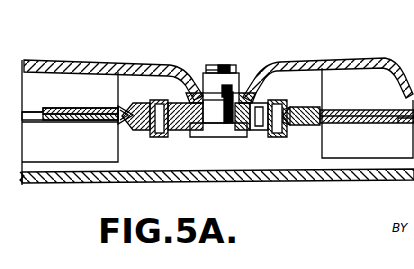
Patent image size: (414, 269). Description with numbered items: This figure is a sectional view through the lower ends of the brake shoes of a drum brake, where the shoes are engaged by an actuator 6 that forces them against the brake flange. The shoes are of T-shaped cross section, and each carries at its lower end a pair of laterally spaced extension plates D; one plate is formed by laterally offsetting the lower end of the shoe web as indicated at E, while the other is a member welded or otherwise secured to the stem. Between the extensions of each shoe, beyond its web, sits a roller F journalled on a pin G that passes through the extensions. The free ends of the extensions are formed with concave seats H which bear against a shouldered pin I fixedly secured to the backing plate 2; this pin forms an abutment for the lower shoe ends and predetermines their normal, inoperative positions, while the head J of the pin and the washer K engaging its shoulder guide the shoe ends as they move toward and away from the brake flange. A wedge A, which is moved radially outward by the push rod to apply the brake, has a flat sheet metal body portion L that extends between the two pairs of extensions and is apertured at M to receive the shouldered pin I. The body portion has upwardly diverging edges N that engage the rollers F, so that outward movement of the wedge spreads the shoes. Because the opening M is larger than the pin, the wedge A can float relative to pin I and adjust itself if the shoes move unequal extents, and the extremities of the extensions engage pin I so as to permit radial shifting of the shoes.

The backing plate 2 is at (290, 63).
The extension plates D is at (73, 107).
The laterally offset lower end of the web E is at (120, 128).
The pin G is at (167, 137).
The concave seats H is at (205, 122).
The shouldered pin I is at (222, 126).
The head of the pin J is at (242, 130).
The washer K is at (190, 97).
The wedge A is at (254, 106).
The upwardly diverging edges N is at (287, 107).
The roller F is at (292, 123).
The flat sheet metal body portion L is at (198, 73).
The aperture M is at (227, 66).
The actuator 6 is at (212, 124).